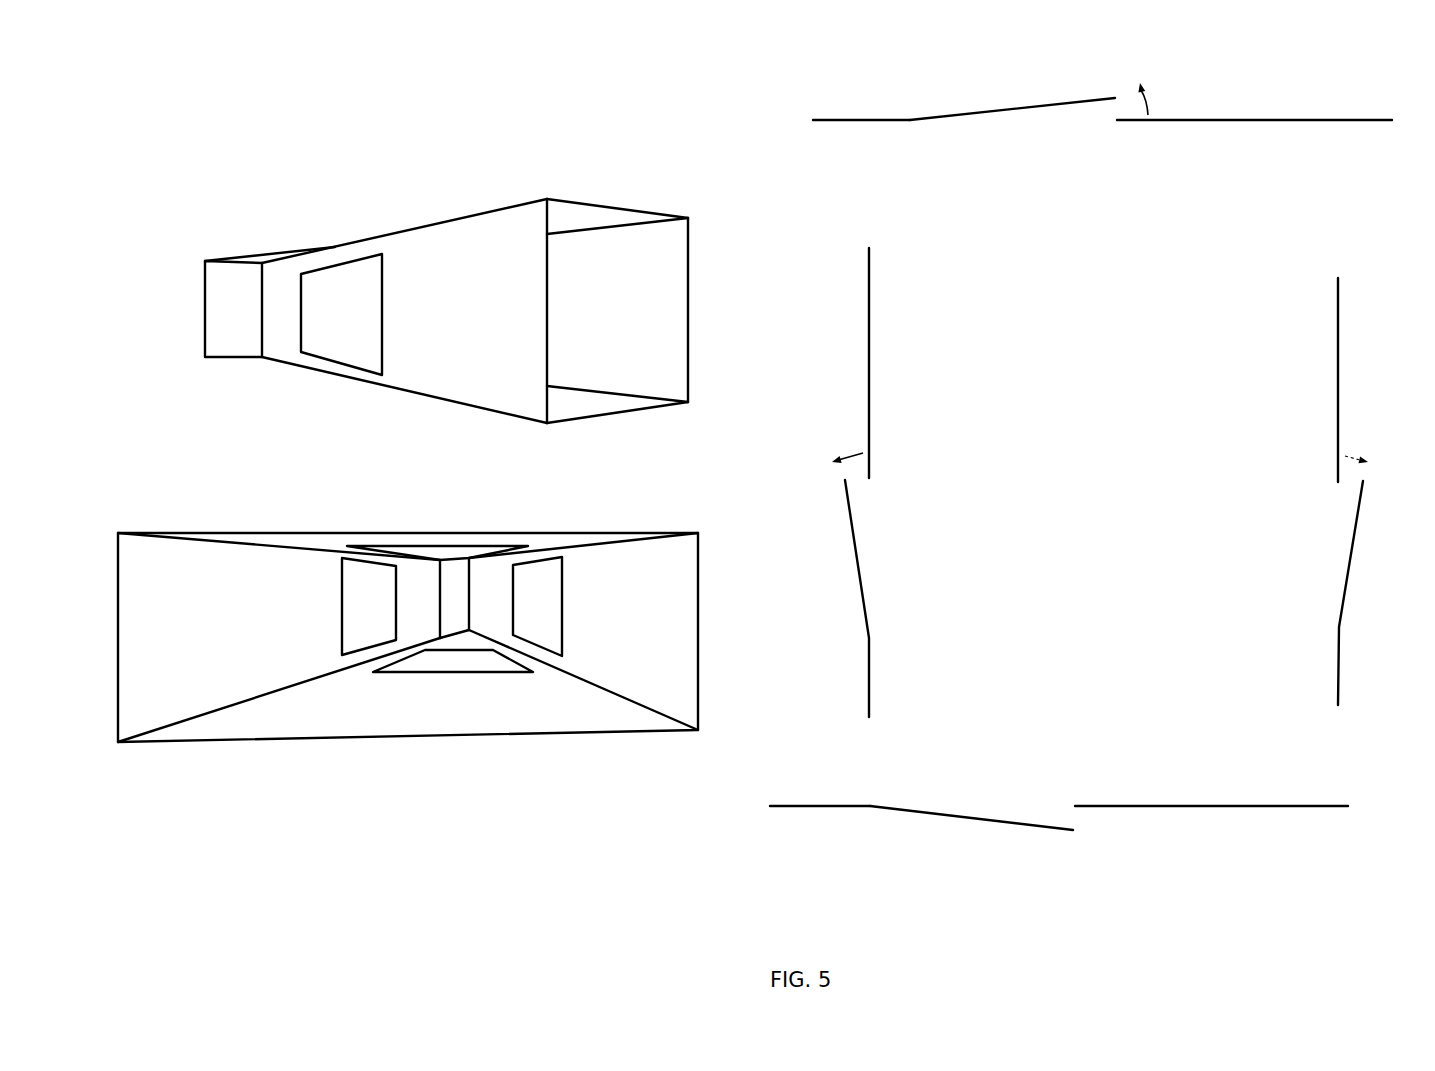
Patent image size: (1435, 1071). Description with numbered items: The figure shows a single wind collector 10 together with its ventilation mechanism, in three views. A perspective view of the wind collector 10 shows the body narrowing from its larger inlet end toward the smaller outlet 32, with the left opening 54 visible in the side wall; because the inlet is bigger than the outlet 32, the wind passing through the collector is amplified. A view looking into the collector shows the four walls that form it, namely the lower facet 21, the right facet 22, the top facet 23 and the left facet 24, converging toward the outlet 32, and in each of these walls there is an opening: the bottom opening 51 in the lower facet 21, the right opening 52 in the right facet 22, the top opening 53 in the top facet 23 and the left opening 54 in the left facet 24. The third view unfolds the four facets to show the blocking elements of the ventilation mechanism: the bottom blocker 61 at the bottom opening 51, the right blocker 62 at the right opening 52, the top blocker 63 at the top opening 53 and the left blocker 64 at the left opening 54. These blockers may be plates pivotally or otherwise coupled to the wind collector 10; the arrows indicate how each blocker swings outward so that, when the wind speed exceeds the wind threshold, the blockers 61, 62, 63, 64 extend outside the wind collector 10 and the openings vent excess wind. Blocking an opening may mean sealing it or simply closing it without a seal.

The wind collector 10 is at (267, 463).
The lower facet 21 is at (1074, 806).
The right facet 22 is at (639, 645).
The top facet 23 is at (1117, 108).
The left facet 24 is at (852, 360).
The outlet 32 is at (239, 326).
The bottom opening 51 is at (469, 671).
The right opening 52 is at (549, 618).
The top opening 53 is at (435, 545).
The left opening 54 is at (358, 331).
The bottom blocker 61 is at (960, 818).
The right blocker 62 is at (1352, 563).
The top blocker 63 is at (1012, 102).
The left blocker 64 is at (855, 557).